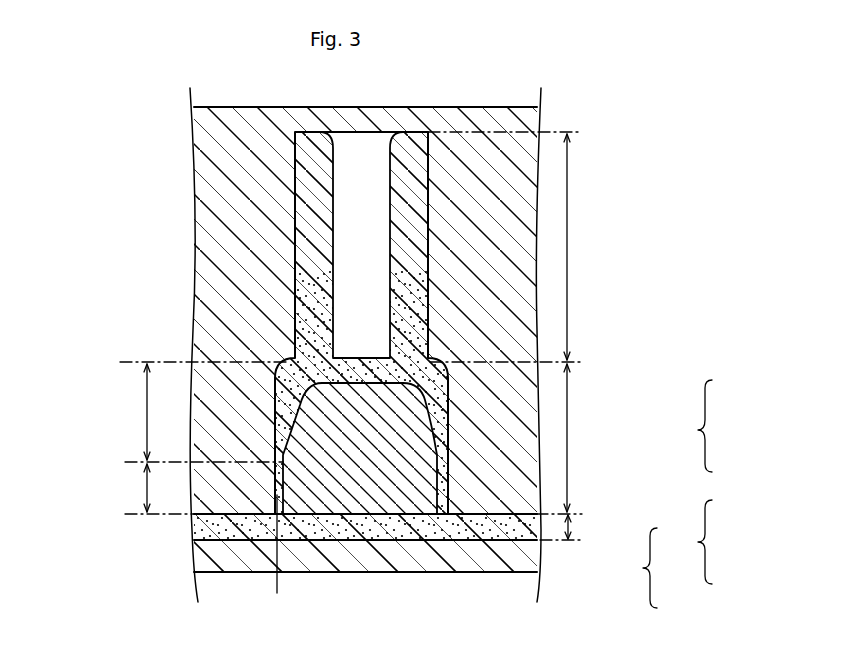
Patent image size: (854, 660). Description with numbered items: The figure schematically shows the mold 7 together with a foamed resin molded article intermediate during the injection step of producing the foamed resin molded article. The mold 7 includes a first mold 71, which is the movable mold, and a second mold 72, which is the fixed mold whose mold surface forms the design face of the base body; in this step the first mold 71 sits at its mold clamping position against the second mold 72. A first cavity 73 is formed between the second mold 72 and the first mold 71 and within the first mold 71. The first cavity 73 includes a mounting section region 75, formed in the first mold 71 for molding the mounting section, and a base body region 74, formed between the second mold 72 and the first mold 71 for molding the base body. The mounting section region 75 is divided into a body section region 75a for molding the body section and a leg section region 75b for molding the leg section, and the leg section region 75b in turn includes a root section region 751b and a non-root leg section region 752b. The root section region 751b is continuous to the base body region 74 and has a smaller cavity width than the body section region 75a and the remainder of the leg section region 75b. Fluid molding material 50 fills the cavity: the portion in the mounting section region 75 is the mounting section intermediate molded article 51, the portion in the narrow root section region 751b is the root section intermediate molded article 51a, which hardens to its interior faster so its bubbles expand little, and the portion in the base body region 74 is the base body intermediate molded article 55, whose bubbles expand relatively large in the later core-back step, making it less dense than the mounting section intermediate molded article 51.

The mold 7 is at (96, 160).
The first mold 71 is at (235, 300).
The second mold 72 is at (212, 563).
The first cavity 73 is at (511, 370).
The base body region 74 is at (570, 528).
The mounting section region 75 is at (511, 358).
The body section region 75a is at (621, 246).
The leg section region 75b is at (624, 436).
The root section region 751b is at (146, 485).
The non-root leg section region 752b is at (146, 412).
The molding material 50 is at (400, 336).
The mounting section intermediate molded article 51 is at (300, 350).
The root section intermediate molded article 51a is at (280, 557).
The base body intermediate molded article 55 is at (213, 533).